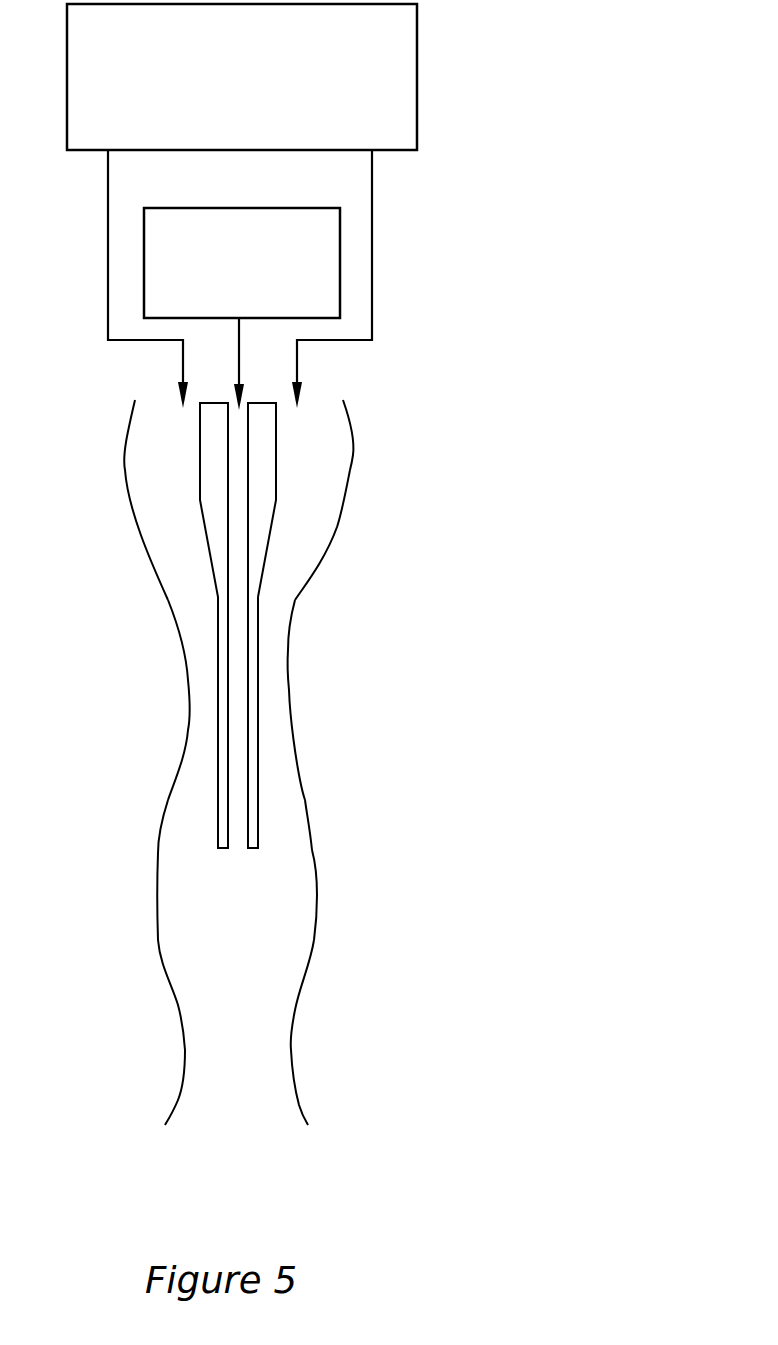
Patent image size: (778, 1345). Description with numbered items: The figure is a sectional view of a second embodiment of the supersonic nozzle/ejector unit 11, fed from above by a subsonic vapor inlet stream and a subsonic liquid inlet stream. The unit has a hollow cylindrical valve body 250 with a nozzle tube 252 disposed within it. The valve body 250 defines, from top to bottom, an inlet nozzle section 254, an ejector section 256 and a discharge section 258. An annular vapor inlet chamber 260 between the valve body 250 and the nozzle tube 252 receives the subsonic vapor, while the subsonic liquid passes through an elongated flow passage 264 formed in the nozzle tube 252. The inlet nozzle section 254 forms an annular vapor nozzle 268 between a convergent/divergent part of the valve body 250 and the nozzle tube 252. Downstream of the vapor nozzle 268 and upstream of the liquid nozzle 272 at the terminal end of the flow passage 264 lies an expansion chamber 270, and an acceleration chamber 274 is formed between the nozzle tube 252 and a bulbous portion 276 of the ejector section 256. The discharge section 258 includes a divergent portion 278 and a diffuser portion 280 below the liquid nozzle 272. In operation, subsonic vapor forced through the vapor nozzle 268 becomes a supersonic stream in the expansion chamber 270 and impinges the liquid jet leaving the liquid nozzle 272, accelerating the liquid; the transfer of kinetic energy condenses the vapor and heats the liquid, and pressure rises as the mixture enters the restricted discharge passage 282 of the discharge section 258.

The supersonic nozzle/ejector unit 11 is at (575, 278).
The valve body 250 is at (368, 464).
The nozzle tube 252 is at (282, 429).
The inlet nozzle section 254 is at (336, 531).
The ejector section 256 is at (310, 828).
The discharge section 258 is at (297, 1093).
The annular vapor inlet chamber 260 is at (190, 472).
The elongated flow passage 264 is at (247, 693).
The vapor nozzle 268 is at (292, 633).
The expansion chamber 270 is at (275, 760).
The liquid nozzle 272 is at (238, 857).
The acceleration chamber 274 is at (305, 892).
The bulbous portion 276 is at (317, 867).
The divergent portion 278 is at (177, 1000).
The diffuser portion 280 is at (178, 1087).
The restricted discharge passage 282 is at (292, 1028).